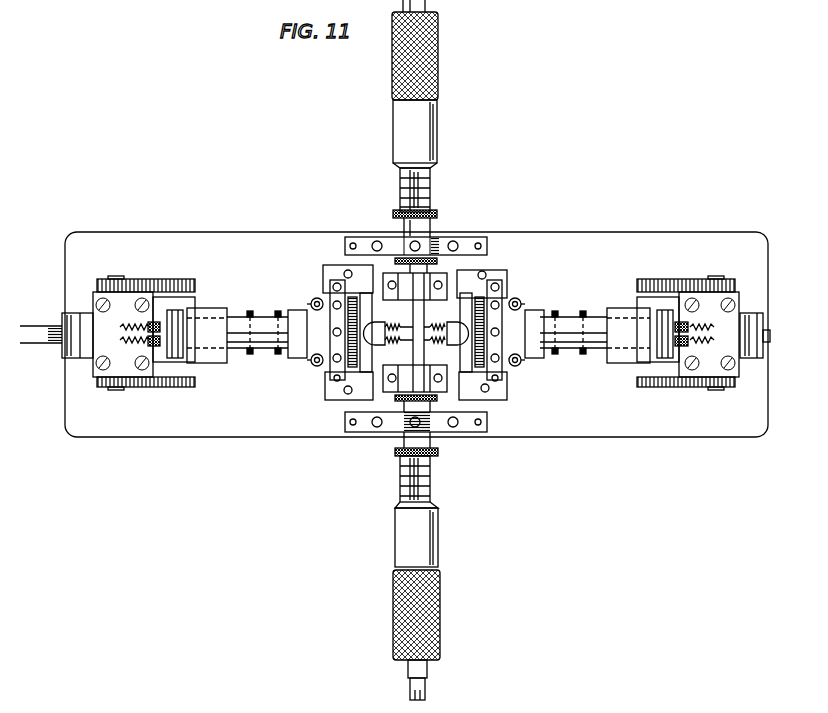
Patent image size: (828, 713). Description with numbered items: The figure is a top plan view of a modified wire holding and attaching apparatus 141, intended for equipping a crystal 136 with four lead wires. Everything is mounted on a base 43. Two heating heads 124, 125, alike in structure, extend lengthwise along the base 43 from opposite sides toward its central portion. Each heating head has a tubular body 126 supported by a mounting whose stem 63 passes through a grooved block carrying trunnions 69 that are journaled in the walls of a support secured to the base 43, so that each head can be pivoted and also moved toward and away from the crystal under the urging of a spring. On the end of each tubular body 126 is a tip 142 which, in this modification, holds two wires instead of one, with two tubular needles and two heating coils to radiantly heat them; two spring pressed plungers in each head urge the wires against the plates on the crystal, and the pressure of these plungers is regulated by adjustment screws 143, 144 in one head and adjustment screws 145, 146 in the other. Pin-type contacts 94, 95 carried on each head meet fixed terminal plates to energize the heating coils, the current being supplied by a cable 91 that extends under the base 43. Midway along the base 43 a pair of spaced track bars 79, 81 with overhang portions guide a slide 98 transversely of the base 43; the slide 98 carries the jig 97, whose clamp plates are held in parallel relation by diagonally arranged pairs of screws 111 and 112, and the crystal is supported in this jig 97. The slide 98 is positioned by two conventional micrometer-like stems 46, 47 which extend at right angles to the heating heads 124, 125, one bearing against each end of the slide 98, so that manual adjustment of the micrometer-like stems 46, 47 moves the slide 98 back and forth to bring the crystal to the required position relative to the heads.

The base 43 is at (636, 438).
The micrometer-like stem 46 is at (448, 121).
The micrometer-like stem 47 is at (448, 536).
The stem 63 is at (60, 322).
The trunnions 69 is at (117, 277).
The track bar 79 is at (344, 402).
The track bar 81 is at (492, 408).
The cable 91 is at (40, 344).
The pin-type contact 94 is at (315, 303).
The pin-type contact 95 is at (316, 364).
The jig 97 is at (435, 316).
The slide 98 is at (447, 268).
The screws 111 is at (388, 297).
The screws 112 is at (396, 382).
The heating head 124 is at (249, 304).
The heating head 125 is at (578, 309).
The tubular body 126 is at (262, 338).
The crystal 136 is at (421, 338).
The apparatus 141 is at (449, 192).
The tips 142 is at (445, 300).
The adjustment screw 143 is at (137, 325).
The adjustment screw 144 is at (138, 345).
The adjustment screw 145 is at (706, 350).
The adjustment screw 146 is at (704, 388).